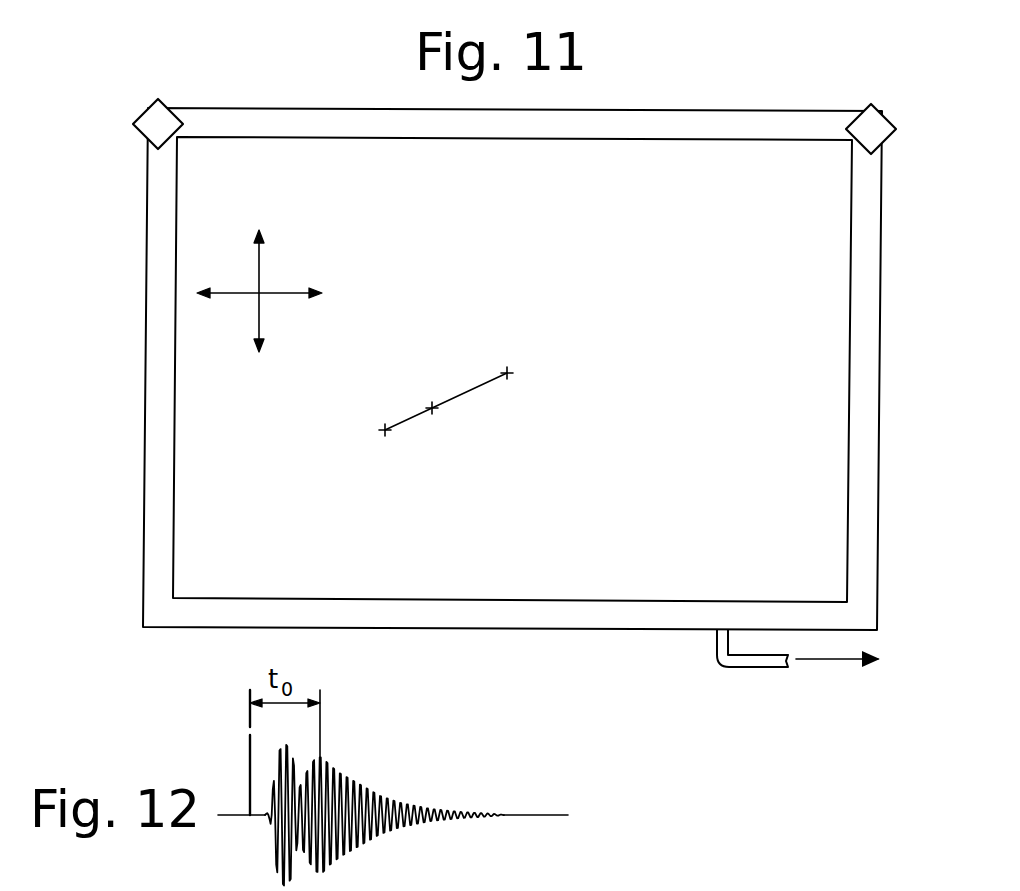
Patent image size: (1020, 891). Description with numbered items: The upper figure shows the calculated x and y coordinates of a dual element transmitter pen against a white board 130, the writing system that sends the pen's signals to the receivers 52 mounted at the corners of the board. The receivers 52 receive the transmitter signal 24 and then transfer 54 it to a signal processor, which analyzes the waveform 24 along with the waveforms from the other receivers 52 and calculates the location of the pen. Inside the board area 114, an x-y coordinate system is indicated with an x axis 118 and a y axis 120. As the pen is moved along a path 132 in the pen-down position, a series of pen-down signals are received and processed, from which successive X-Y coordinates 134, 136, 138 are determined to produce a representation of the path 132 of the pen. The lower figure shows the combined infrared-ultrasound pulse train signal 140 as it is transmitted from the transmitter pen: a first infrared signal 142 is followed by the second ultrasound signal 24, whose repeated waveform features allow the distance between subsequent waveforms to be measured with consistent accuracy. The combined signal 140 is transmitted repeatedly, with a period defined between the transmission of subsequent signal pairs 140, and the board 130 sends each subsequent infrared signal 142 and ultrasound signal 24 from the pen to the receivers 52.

In FIG. 12, the transmission signal 24 is at (488, 768).
In FIG. 11, the receiver 52 is at (158, 100).
In FIG. 11, the transfer 54 is at (765, 668).
In FIG. 11, the active area of whiteboard 114 is at (610, 138).
In FIG. 11, the x axis 118 is at (295, 279).
In FIG. 11, the y axis 120 is at (235, 318).
In FIG. 11, the white board 130 is at (512, 325).
In FIG. 11, the path 132 is at (462, 378).
In FIG. 11, the first position point 134 is at (382, 427).
In FIG. 11, the X-Y coordinate 136 is at (427, 404).
In FIG. 11, the X-Y coordinate 138 is at (512, 370).
In FIG. 12, the combined transmitter signal 140 is at (496, 785).
In FIG. 12, the infrared signal 142 is at (248, 745).